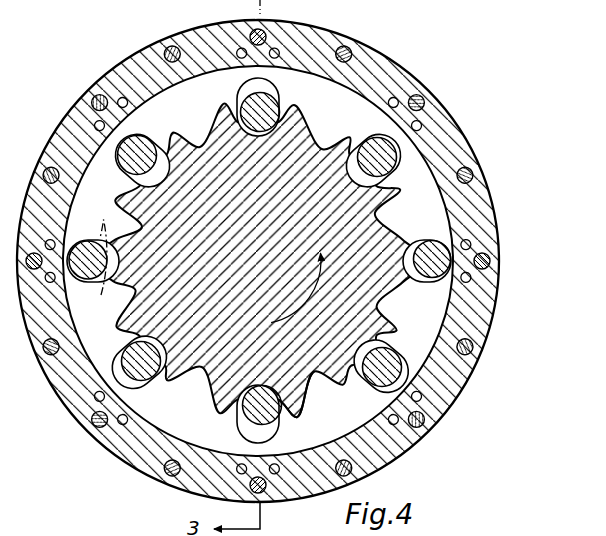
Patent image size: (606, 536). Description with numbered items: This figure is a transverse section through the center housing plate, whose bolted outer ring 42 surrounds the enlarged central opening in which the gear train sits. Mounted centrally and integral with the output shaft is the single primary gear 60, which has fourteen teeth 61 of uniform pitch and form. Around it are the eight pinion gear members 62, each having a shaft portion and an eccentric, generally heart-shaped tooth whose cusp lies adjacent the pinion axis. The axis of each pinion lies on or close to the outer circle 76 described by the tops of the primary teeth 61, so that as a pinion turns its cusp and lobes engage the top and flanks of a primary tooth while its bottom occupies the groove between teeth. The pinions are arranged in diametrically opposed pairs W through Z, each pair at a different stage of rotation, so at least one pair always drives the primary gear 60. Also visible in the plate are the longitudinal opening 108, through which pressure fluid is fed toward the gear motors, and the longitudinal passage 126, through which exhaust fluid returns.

The housing ring 42 is at (347, 46).
The primary gear 60 is at (187, 137).
The teeth 61 is at (300, 400).
The pinion gear members 62 is at (361, 121).
The outer circle 76 is at (103, 212).
The longitudinal opening 108 is at (474, 241).
The longitudinal passage 126 is at (475, 278).